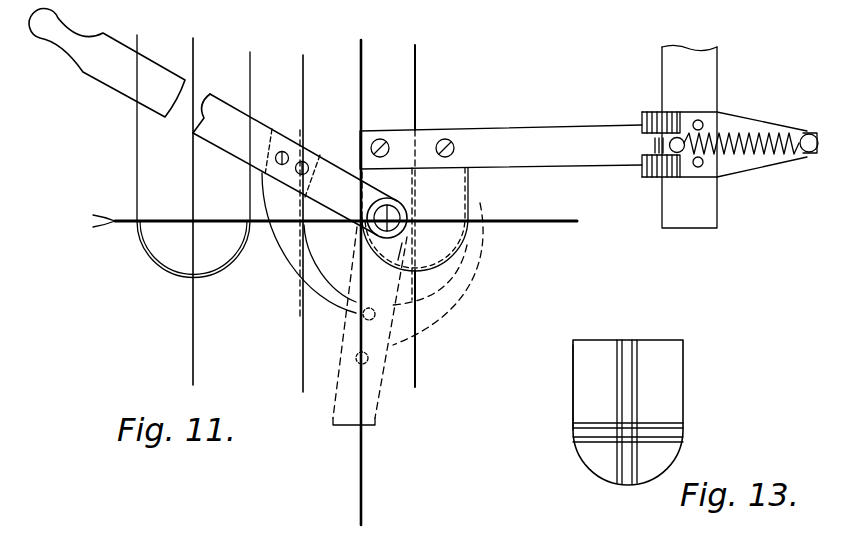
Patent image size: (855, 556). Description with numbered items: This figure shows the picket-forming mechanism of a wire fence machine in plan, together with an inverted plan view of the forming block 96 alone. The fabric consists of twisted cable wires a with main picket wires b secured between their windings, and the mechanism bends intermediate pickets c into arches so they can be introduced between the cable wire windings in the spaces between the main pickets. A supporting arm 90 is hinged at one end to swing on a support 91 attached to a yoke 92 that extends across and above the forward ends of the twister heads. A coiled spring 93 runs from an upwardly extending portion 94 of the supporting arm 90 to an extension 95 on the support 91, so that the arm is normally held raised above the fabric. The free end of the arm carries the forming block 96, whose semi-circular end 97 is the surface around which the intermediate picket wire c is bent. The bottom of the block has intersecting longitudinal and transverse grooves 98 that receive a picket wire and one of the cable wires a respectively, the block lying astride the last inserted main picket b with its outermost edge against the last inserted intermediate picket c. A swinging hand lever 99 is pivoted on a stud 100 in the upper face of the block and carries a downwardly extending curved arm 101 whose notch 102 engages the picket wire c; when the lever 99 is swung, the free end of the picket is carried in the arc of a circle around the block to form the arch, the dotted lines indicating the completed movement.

In FIG. 11, the supporting arm 90 is at (570, 126).
In FIG. 11, the support 91 is at (663, 113).
In FIG. 11, the yoke 92 is at (681, 58).
In FIG. 11, the coiled spring 93 is at (722, 133).
In FIG. 11, the upwardly extending portion 94 is at (652, 142).
In FIG. 11, the extension 95 is at (805, 132).
In FIG. 11, the forming block 96 is at (450, 198).
In FIG. 13, the forming block 96 is at (573, 388).
In FIG. 13, the semi-circular end 97 is at (597, 463).
In FIG. 13, the intersecting longitudinal and transverse grooves 98 is at (578, 433).
In FIG. 11, the swinging hand lever 99 is at (327, 168).
In FIG. 11, the stud 100 is at (391, 206).
In FIG. 11, the downwardly extending curved arm 101 is at (298, 252).
In FIG. 11, the notch 102 is at (358, 314).
In FIG. 11, the cable wires a is at (556, 220).
In FIG. 11, the main picket wires b is at (195, 363).
In FIG. 11, the intermediate pickets c is at (365, 447).